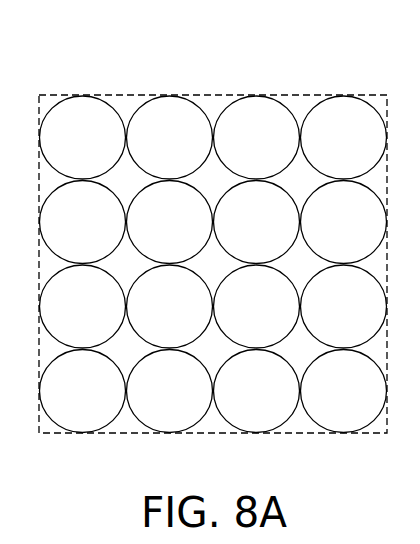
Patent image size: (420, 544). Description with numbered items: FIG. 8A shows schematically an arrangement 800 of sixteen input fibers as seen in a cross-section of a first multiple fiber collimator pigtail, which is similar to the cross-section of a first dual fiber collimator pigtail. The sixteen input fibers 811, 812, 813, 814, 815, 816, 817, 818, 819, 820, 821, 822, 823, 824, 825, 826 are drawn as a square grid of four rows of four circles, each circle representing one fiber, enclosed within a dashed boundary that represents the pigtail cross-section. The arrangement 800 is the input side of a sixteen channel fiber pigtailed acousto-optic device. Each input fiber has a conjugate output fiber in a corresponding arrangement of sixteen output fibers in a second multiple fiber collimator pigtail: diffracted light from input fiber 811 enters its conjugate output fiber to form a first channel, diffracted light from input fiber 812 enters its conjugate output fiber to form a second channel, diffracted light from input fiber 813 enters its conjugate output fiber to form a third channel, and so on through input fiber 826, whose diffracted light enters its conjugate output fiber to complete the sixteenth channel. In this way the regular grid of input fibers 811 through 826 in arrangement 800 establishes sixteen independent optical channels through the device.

The arrangement of sixteen input fibers 800 is at (203, 67).
The input fiber 811 is at (170, 222).
The input fiber 812 is at (257, 222).
The input fiber 813 is at (170, 306).
The input fiber 814 is at (257, 306).
The input fiber 815 is at (170, 137).
The input fiber 816 is at (257, 137).
The input fiber 817 is at (83, 222).
The input fiber 818 is at (344, 222).
The input fiber 819 is at (83, 306).
The input fiber 820 is at (344, 306).
The input fiber 821 is at (170, 391).
The input fiber 822 is at (257, 391).
The input fiber 823 is at (83, 137).
The input fiber 824 is at (344, 137).
The input fiber 825 is at (83, 391).
The input fiber 826 is at (344, 391).